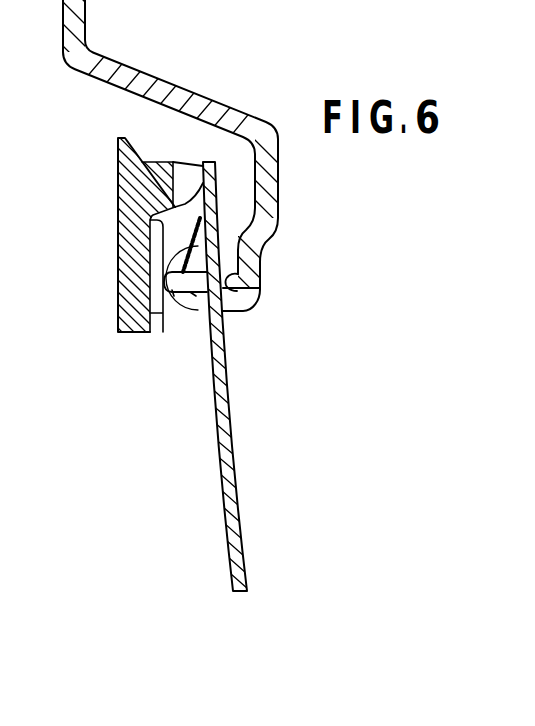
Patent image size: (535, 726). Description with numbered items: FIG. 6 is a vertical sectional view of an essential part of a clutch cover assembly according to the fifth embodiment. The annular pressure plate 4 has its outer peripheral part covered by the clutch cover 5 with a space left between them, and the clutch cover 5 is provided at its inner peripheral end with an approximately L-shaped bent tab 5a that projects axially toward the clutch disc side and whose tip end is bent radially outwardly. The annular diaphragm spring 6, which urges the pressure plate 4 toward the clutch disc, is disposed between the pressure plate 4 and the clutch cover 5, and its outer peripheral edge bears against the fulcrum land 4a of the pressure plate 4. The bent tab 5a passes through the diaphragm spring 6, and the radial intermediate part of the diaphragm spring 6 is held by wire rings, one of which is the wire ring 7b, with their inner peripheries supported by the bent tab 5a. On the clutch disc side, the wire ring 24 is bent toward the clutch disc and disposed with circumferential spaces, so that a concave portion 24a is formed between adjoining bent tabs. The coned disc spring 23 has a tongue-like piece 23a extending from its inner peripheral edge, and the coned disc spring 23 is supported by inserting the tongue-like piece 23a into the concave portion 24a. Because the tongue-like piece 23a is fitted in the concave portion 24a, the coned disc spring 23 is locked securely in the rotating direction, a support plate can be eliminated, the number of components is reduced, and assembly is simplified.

The pressure plate 4 is at (114, 171).
The fulcrum land 4a is at (187, 175).
The clutch cover 5 is at (241, 101).
The bent tab 5a is at (244, 312).
The diaphragm spring 6 is at (239, 423).
The wire ring 7b is at (238, 274).
The coned disc spring 23 is at (185, 236).
The tongue-like piece 23a is at (172, 296).
The wire ring 24 is at (161, 285).
The concave portion 24a is at (190, 296).